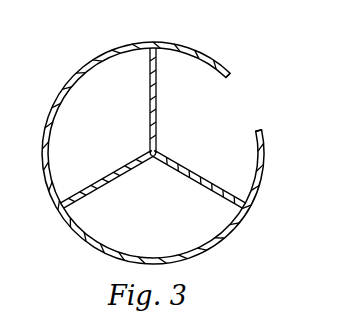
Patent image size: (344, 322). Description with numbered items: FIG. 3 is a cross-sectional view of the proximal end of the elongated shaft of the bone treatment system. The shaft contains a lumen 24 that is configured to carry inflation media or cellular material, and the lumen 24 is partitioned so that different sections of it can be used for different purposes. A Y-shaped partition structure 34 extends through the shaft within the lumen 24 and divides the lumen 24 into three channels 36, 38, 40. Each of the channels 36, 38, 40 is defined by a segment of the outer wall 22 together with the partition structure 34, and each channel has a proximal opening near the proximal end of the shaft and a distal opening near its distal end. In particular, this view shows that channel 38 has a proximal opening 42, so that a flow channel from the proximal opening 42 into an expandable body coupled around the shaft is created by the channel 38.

The outer wall 22 is at (65, 87).
The lumen 24 is at (245, 157).
The partition structure 34 is at (148, 100).
The channel 36 is at (115, 138).
The channel 38 is at (212, 140).
The channel 40 is at (165, 219).
The proximal opening 42 is at (225, 118).